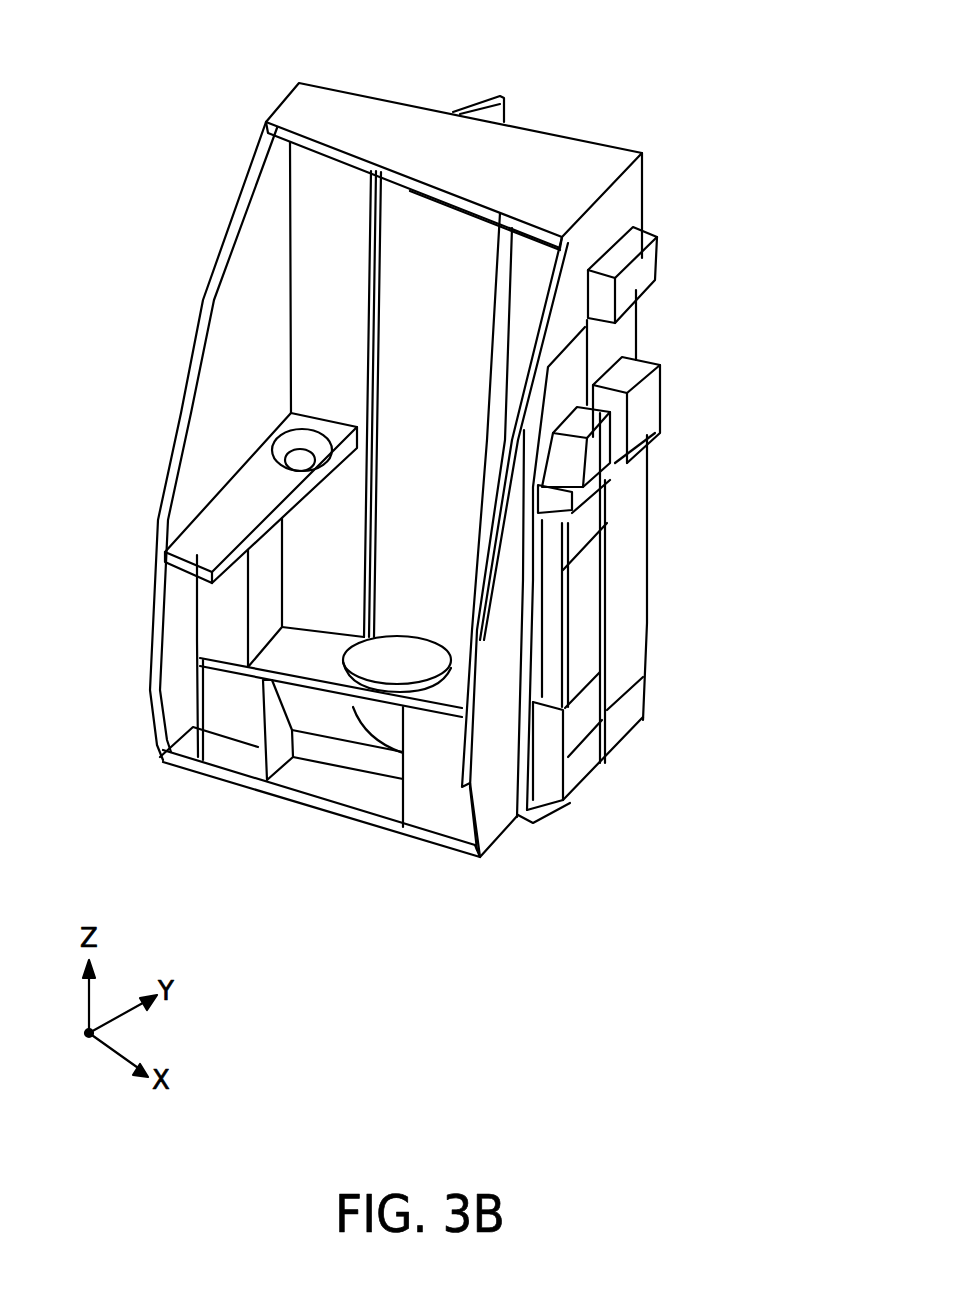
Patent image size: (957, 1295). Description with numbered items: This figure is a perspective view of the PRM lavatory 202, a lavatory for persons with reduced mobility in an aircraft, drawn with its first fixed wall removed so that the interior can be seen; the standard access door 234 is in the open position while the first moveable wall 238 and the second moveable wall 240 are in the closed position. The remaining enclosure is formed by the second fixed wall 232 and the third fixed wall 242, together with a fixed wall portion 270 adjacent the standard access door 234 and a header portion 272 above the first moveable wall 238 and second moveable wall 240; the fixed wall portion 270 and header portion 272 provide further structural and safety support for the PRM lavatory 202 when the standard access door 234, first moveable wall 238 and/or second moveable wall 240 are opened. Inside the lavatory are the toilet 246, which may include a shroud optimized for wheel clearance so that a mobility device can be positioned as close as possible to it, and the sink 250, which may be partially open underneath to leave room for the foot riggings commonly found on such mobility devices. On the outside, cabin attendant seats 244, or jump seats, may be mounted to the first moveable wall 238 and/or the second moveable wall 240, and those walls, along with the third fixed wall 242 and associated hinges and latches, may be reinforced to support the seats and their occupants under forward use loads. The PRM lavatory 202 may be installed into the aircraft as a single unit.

The PRM lavatory 202 is at (115, 198).
The second fixed wall 232 is at (178, 408).
The standard access door 234 is at (468, 102).
The first moveable wall 238 is at (628, 338).
The second moveable wall 240 is at (565, 395).
The third fixed wall 242 is at (498, 823).
The cabin attendant seats 244 is at (633, 595).
The toilet 246 is at (383, 667).
The sink 250 is at (283, 452).
The fixed wall portion 270 is at (320, 188).
The header portion 272 is at (628, 210).